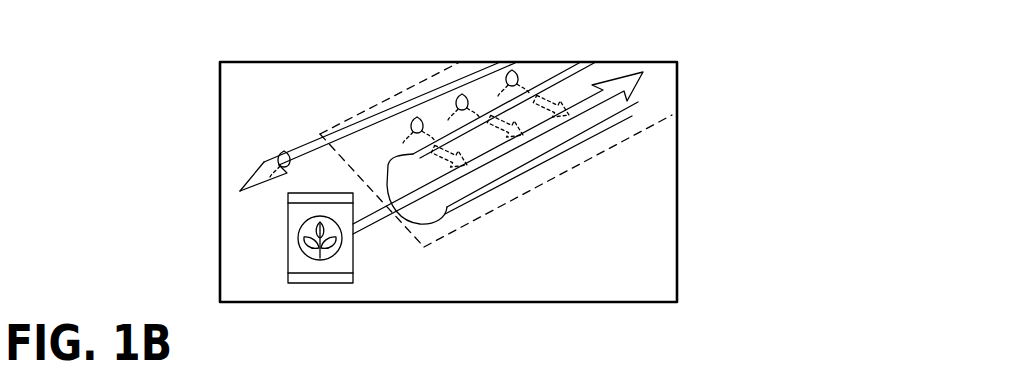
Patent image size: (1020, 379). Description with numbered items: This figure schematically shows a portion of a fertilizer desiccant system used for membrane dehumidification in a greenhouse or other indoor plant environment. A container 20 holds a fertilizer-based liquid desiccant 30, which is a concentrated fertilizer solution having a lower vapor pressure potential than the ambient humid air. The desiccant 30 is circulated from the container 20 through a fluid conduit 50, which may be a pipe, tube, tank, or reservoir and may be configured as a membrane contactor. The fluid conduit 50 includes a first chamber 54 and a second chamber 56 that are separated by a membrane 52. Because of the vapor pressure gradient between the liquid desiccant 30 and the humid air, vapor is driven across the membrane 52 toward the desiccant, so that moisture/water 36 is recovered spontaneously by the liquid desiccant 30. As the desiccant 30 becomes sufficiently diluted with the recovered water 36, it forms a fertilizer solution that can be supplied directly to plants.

The container 20 is at (288, 218).
The fertilizer-based liquid desiccant 30 is at (298, 251).
The moisture/water 36 is at (538, 72).
The fluid conduit 50 is at (471, 71).
The membrane 52 is at (264, 162).
The first chamber 54 is at (366, 156).
The second chamber 56 is at (433, 205).